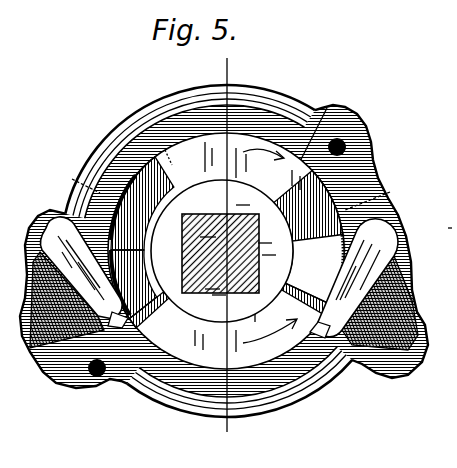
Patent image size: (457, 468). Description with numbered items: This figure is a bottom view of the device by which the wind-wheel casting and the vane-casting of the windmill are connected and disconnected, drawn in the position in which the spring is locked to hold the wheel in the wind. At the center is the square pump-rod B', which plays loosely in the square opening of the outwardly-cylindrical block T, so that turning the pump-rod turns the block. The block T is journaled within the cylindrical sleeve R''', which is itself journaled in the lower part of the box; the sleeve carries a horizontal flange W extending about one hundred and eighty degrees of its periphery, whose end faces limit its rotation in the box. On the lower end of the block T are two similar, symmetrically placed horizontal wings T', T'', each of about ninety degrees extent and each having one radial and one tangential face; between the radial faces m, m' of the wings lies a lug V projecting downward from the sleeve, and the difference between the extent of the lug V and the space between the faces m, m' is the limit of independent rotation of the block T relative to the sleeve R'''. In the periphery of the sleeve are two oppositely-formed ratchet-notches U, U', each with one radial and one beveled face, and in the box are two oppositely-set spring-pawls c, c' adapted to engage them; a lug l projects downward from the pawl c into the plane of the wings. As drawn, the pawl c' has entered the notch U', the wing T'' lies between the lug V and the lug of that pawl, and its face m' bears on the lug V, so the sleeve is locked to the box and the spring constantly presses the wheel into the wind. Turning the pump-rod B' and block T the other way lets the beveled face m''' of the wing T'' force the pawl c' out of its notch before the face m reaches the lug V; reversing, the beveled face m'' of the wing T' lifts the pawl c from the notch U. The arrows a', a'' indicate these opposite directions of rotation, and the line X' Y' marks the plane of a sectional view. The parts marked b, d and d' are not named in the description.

The casing ring b is at (272, 116).
The radial face m is at (355, 231).
The radial face m' is at (313, 358).
The beveled face m'' is at (87, 260).
The beveled face m''' is at (159, 314).
The cylindrical sleeve R''' is at (229, 189).
The cylindrical block T is at (222, 251).
The wing T' is at (226, 251).
The wing T'' is at (226, 310).
The ratchet-notch U is at (125, 182).
The ratchet-notch U' is at (141, 301).
The lug V is at (309, 243).
The pump-rod B' is at (229, 254).
The direction arrow a' is at (263, 159).
The arrow a'' is at (270, 335).
The spring-pawl c is at (358, 278).
The spring-pawl c' is at (81, 267).
The lug l is at (221, 318).
The spring d is at (380, 334).
The spring d' is at (62, 330).
The section line end X' is at (236, 154).
The section line end Y' is at (235, 352).
The horizontal flange W is at (447, 236).